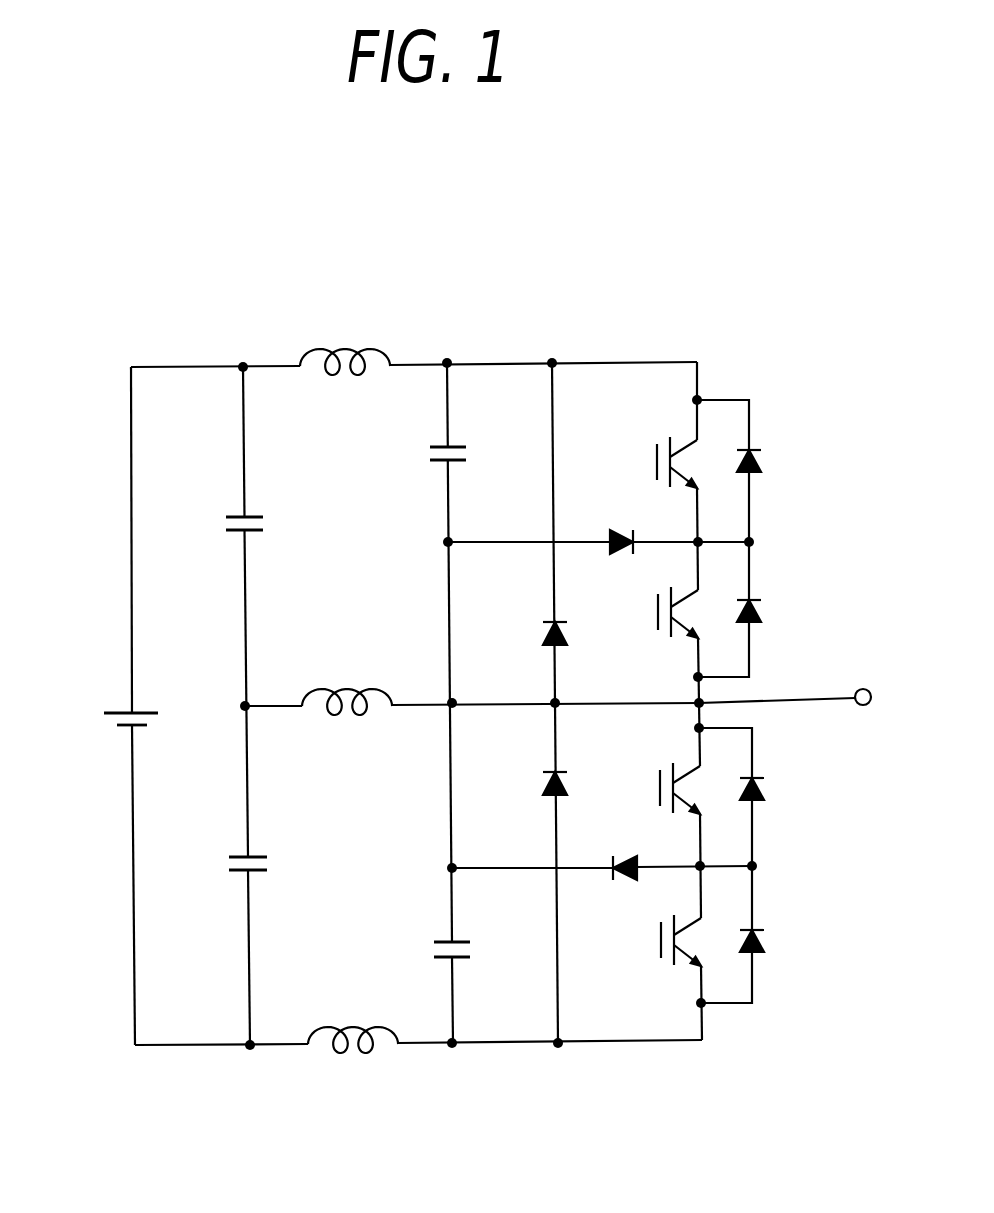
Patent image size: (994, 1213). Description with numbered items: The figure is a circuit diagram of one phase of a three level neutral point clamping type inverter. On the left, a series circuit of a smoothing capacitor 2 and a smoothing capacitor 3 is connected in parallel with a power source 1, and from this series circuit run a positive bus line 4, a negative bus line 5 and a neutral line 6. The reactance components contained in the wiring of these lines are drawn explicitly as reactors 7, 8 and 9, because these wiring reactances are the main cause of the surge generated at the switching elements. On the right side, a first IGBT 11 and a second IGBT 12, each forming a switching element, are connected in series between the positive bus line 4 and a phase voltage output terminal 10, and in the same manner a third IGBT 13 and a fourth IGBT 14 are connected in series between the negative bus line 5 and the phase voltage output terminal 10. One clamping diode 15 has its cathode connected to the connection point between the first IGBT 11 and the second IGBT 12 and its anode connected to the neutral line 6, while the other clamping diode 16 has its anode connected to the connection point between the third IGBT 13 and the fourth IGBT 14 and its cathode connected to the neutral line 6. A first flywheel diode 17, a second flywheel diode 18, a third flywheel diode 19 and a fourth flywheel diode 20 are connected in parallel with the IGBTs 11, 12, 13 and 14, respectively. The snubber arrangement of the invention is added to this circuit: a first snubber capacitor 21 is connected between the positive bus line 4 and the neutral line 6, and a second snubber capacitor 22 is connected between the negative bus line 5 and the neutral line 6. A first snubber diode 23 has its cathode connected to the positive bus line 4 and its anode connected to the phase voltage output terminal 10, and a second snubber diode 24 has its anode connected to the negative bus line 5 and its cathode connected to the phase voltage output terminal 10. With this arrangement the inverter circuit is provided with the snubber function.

The power source 1 is at (120, 710).
The smoothing capacitor 2 is at (237, 516).
The smoothing capacitor 3 is at (240, 856).
The positive bus line 4 is at (502, 362).
The negative bus line 5 is at (513, 1044).
The neutral line 6 is at (448, 651).
The reactor 7 is at (320, 385).
The reactor 8 is at (350, 718).
The reactor 9 is at (355, 1062).
The phase voltage output terminal 10 is at (871, 691).
The first IGBT 11 is at (692, 465).
The second IGBT 12 is at (695, 607).
The third IGBT 13 is at (697, 783).
The fourth IGBT 14 is at (695, 937).
The clamping diode 15 is at (620, 556).
The clamping diode 16 is at (630, 882).
The first flywheel diode 17 is at (763, 470).
The second flywheel diode 18 is at (760, 617).
The third flywheel diode 19 is at (762, 788).
The fourth flywheel diode 20 is at (767, 947).
The first snubber capacitor 21 is at (432, 470).
The second snubber capacitor 22 is at (440, 940).
The first snubber diode 23 is at (545, 640).
The second snubber diode 24 is at (545, 790).